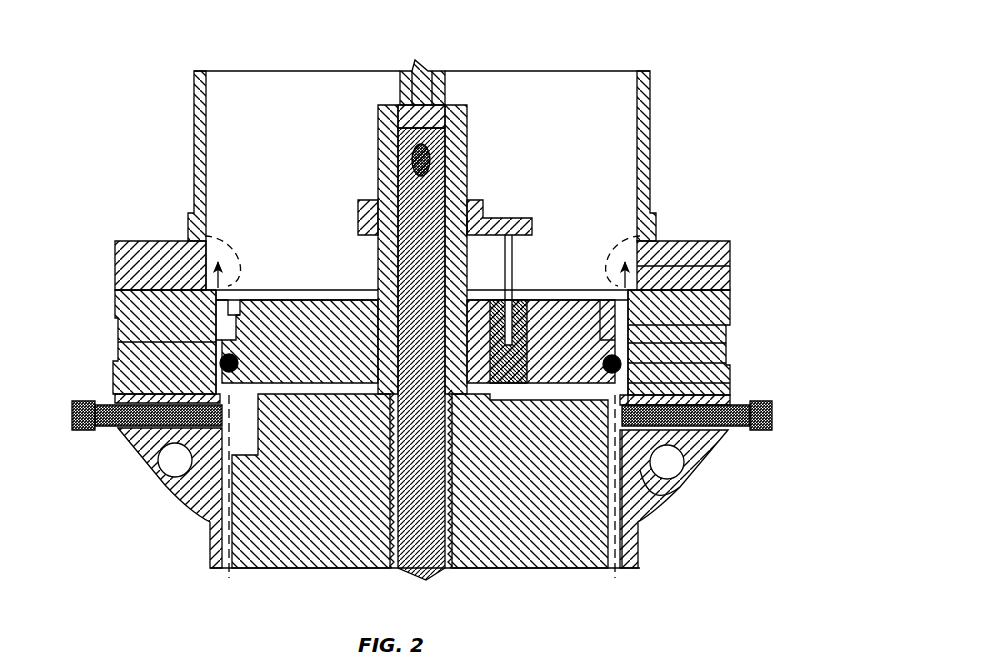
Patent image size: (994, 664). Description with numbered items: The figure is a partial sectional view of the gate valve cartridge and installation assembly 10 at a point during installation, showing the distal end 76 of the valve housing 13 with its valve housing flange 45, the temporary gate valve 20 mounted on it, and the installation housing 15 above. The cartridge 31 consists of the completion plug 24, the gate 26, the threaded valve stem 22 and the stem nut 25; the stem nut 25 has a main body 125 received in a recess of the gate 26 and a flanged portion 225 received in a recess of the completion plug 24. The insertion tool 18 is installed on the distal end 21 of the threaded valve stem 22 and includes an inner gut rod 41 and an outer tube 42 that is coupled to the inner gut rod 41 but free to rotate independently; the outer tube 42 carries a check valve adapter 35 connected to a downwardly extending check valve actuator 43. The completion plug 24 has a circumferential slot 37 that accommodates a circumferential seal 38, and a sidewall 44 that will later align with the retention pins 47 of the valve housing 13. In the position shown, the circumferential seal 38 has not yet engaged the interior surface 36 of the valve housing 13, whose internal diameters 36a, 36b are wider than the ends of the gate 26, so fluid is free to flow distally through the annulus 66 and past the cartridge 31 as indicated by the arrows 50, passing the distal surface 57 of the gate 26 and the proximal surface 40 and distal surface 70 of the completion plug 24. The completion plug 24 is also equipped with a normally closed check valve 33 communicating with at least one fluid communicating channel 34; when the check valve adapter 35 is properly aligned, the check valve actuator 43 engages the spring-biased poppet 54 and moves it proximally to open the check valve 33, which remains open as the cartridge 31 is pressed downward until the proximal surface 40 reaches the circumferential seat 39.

The gate valve cartridge and installation assembly 10 is at (700, 56).
The valve housing 13 is at (650, 538).
The installation housing 15 is at (194, 148).
The insertion tool 18 is at (450, 89).
The temporary gate valve 20 is at (145, 306).
The distal end of the threaded valve stem 21 is at (494, 206).
The threaded valve stem 22 is at (392, 530).
The completion plug 24 is at (566, 290).
The stem nut 25 is at (230, 488).
The gate 26 is at (542, 572).
The cartridge 31 is at (252, 572).
The check valve 33 is at (540, 332).
The fluid communicating channel 34 is at (672, 456).
The check valve adapter 35 is at (490, 213).
The interior surface of the valve housing 36 is at (125, 438).
The internal diameter 36a is at (668, 478).
The internal diameter 36b is at (640, 565).
The circumferential slot 37 is at (150, 343).
The circumferential seal 38 is at (726, 366).
The circumferential seat 39 is at (640, 508).
The proximal surface of the completion plug 40 is at (232, 390).
The inner gut rod 41 is at (412, 93).
The outer tube 42 is at (378, 125).
The check valve actuator 43 is at (730, 268).
The sidewall of the completion plug 44 is at (600, 345).
The valve housing flange 45 is at (655, 486).
The retention pins 47 is at (740, 430).
The arrows 50 is at (195, 230).
The spring-biased poppet 54 is at (726, 325).
The distal surface of the gate 57 is at (332, 350).
The annulus 66 is at (160, 466).
The distal surface of the cylindrical body 70 is at (263, 292).
The distal end of the valve housing 76 is at (730, 389).
The main body of the stem nut 125 is at (376, 423).
The flanged portion of the stem nut 225 is at (290, 300).